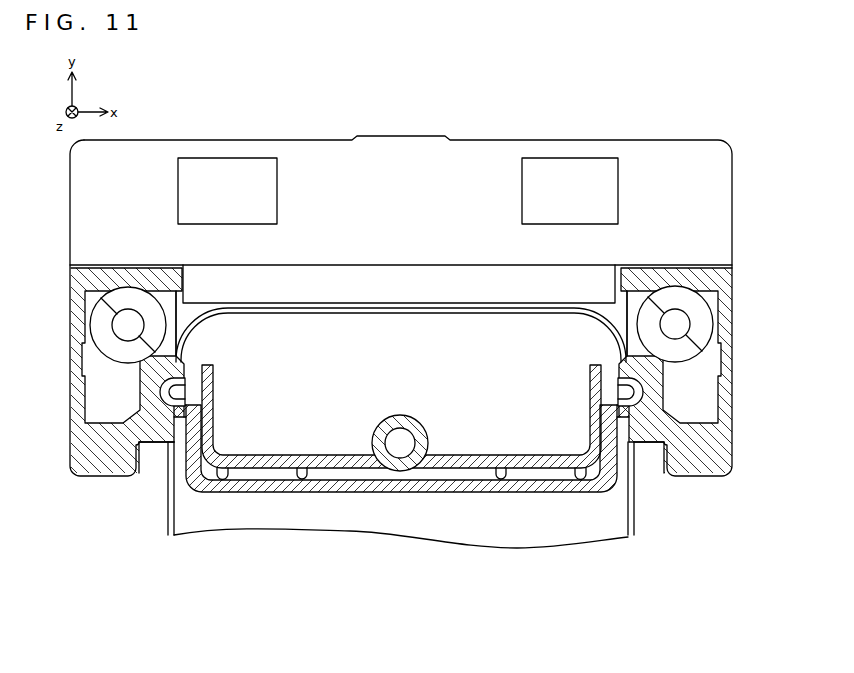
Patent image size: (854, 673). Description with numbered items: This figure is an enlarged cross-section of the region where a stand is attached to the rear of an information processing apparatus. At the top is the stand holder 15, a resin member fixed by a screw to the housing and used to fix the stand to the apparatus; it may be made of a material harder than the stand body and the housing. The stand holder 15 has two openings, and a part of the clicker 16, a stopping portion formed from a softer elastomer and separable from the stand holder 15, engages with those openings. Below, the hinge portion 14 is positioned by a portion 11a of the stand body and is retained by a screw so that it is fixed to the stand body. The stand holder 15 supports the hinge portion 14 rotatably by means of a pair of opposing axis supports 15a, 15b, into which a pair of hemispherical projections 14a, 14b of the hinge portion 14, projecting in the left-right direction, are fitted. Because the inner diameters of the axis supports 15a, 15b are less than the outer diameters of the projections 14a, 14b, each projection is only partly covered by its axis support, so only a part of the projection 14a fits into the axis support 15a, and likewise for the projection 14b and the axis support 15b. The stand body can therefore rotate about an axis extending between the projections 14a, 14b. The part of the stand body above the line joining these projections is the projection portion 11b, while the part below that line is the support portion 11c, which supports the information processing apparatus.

The portion of the stand body 11a is at (448, 460).
The projection portion 11b is at (563, 331).
The support portion 11c is at (602, 512).
The hinge portion 14 is at (347, 483).
The projection 14a is at (168, 405).
The projection 14b is at (637, 440).
The stand holder 15 is at (682, 170).
The axis support 15a is at (157, 394).
The axis support 15b is at (643, 392).
The clicker 16 is at (534, 183).